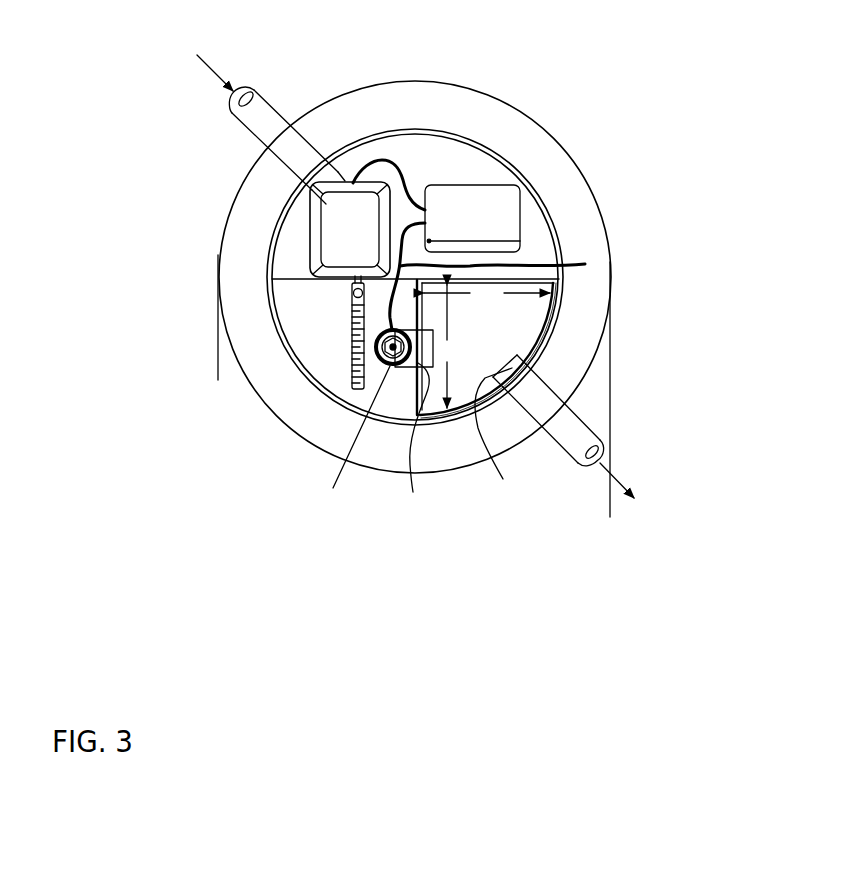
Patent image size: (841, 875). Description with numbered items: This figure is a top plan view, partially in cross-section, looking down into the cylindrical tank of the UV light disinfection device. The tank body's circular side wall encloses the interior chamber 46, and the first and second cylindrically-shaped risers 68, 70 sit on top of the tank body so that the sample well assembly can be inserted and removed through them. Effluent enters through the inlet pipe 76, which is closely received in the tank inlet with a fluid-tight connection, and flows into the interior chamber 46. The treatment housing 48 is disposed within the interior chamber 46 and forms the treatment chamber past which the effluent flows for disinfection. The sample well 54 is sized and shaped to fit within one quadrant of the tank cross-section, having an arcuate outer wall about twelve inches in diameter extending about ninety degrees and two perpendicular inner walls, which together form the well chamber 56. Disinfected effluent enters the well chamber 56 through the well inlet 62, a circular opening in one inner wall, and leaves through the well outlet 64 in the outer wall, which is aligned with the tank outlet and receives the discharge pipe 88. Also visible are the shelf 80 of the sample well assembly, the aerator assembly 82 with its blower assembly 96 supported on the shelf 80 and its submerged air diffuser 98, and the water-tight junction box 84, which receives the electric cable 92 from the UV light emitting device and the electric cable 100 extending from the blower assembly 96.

The interior chamber 46 is at (326, 334).
The treatment housing 48 is at (333, 488).
The sample well 54 is at (487, 331).
The well chamber 56 is at (463, 368).
The well inlet 62 is at (430, 438).
The well outlet 64 is at (506, 441).
The first riser 68 is at (525, 166).
The second riser 70 is at (497, 267).
The inlet pipe 76 is at (247, 133).
The shelf 80 is at (438, 161).
The aerator assembly 82 is at (254, 222).
The junction box 84 is at (530, 215).
The discharge pipe 88 is at (590, 419).
The electric cable 92 is at (585, 264).
The blower assembly 96 is at (312, 251).
The air diffuser 98 is at (350, 343).
The electric cable 100 is at (380, 158).